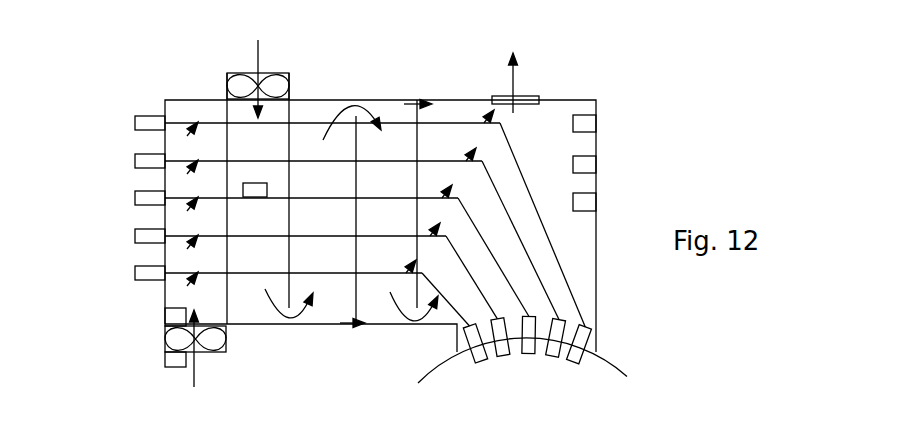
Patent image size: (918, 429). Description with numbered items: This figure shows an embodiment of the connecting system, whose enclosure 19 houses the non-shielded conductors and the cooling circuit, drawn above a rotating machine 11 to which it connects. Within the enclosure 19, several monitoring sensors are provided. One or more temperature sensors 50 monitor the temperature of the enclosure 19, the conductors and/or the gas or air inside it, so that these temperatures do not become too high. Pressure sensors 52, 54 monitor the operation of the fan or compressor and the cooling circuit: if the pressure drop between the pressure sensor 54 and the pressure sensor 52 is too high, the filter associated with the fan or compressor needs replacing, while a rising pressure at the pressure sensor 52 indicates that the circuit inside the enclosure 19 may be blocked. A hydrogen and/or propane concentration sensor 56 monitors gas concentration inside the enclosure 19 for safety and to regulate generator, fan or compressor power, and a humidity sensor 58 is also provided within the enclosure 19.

The drum 11 is at (547, 387).
The enclosure 19 is at (596, 307).
The temperature sensor 50 is at (255, 185).
The pressure sensor 52 is at (173, 319).
The pressure sensor 54 is at (173, 361).
The hydrogen and/or propane concentration sensor 56 is at (585, 162).
The humidity sensor 58 is at (585, 200).